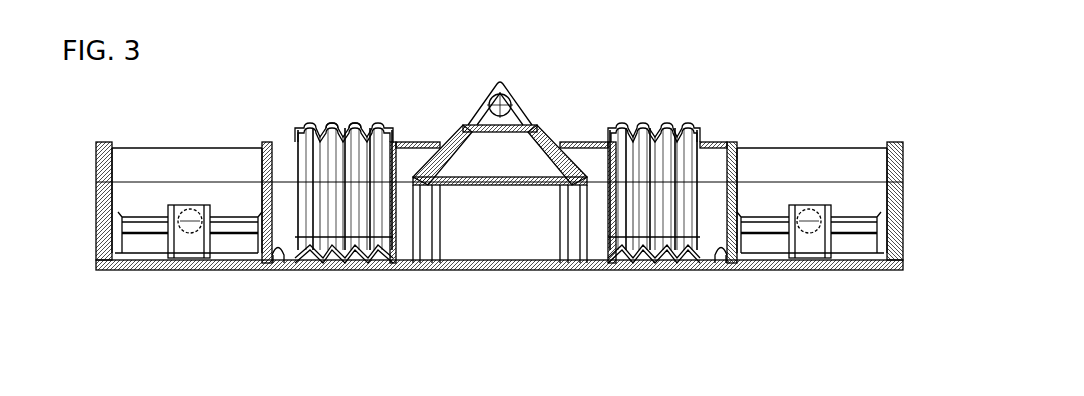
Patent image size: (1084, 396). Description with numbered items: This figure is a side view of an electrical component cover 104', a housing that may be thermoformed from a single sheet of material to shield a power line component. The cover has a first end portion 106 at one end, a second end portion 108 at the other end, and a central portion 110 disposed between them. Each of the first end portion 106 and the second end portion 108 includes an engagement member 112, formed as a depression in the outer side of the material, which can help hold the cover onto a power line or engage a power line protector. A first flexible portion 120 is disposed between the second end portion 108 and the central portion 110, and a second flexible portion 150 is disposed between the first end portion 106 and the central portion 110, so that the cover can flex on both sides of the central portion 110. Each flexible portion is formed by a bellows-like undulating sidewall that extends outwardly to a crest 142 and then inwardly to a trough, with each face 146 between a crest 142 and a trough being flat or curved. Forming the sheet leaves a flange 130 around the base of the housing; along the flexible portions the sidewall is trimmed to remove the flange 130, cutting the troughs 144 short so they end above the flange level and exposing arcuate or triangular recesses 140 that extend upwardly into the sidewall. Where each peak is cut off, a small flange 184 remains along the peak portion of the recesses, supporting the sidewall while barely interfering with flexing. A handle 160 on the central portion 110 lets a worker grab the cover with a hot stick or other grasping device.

The electrical component cover 104' is at (499, 139).
The first end portion 106 is at (180, 148).
The second end portion 108 is at (848, 148).
The central portion 110 is at (545, 127).
The engagement member 112 is at (183, 222).
The first flexible portion 120 is at (499, 198).
The flange 130 is at (277, 258).
The recesses 140 is at (375, 268).
The convolution crest 142 is at (358, 123).
The troughs 144 is at (320, 265).
The face 146 is at (372, 124).
The second flexible portion 150 is at (333, 124).
The handle 160 is at (490, 95).
The flange 184 is at (717, 143).